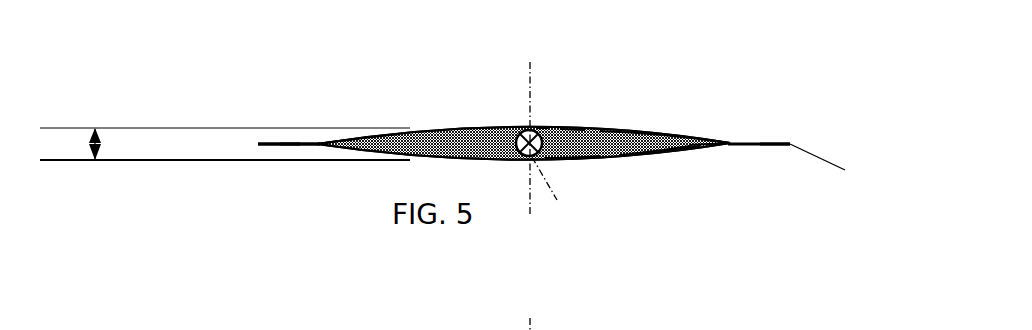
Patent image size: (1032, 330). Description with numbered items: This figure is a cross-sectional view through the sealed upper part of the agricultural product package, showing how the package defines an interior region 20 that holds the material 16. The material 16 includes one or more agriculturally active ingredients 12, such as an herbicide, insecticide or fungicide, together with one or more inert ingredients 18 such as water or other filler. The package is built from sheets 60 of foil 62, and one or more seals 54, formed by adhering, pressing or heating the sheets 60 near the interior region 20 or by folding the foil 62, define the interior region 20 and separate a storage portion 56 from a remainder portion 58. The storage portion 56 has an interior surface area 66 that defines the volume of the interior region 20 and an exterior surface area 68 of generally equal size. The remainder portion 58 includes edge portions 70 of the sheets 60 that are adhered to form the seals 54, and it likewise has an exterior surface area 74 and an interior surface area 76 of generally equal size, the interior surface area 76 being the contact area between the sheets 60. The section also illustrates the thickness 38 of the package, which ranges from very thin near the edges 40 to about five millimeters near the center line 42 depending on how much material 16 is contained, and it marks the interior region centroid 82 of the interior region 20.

The agriculturally active ingredient 12 is at (440, 127).
The material 16 is at (490, 127).
The inert ingredient 18 is at (600, 131).
The interior region 20 is at (495, 155).
The thickness 38 is at (100, 143).
The edges 40 is at (829, 167).
The center line 42 is at (559, 196).
The seals 54 is at (312, 142).
The storage portion 56 is at (642, 150).
The remainder portion 58 is at (762, 143).
The sheets 60 is at (572, 130).
The foil 62 is at (260, 137).
The interior surface area 66 is at (565, 157).
The exterior surface area 68 is at (540, 130).
The edge portions 70 is at (285, 145).
The exterior surface area 74 is at (782, 142).
The interior surface area 76 is at (280, 145).
The interior region centroid 82 is at (520, 128).